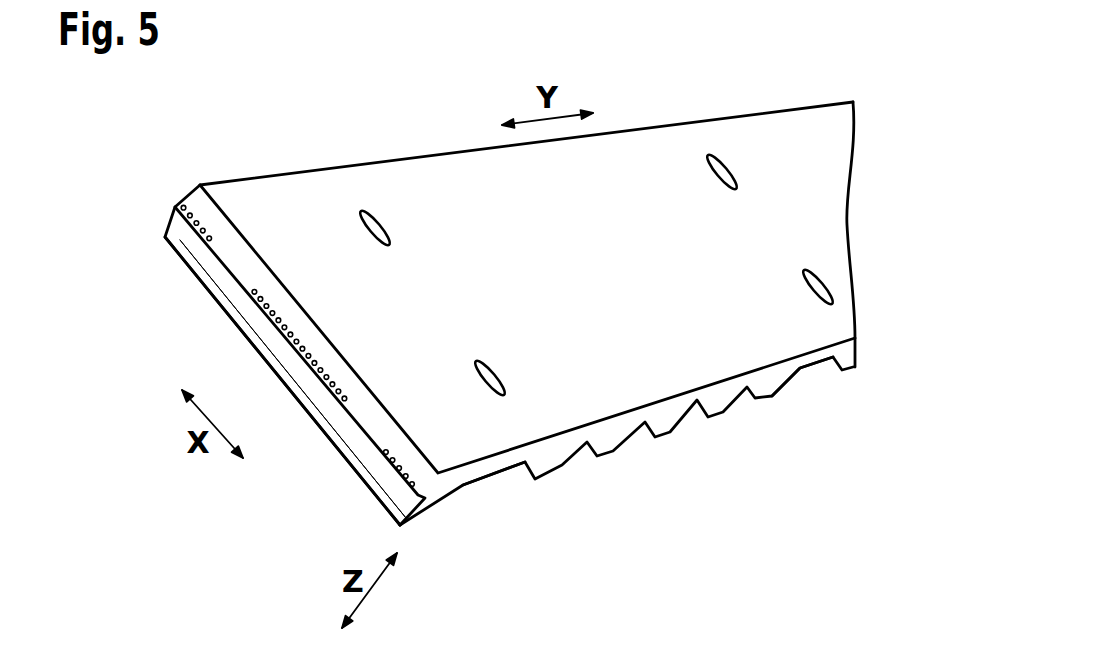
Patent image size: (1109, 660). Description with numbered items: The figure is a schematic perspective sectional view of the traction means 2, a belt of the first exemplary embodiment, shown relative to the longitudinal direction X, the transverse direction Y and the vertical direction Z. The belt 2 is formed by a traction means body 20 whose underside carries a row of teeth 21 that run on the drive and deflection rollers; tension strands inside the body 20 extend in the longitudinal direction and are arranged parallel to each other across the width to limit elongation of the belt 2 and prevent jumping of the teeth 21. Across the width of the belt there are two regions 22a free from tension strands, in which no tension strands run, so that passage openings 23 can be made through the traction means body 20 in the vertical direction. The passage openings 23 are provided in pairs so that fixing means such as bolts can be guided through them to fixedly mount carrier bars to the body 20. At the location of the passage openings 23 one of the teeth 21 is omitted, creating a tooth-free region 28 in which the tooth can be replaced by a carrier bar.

The traction means 2 is at (885, 99).
The traction means body 20 is at (203, 196).
The teeth 21 is at (165, 240).
The regions free from tension strands 22a is at (236, 272).
The passage openings 23 is at (372, 230).
The tooth-free region 28 is at (487, 500).